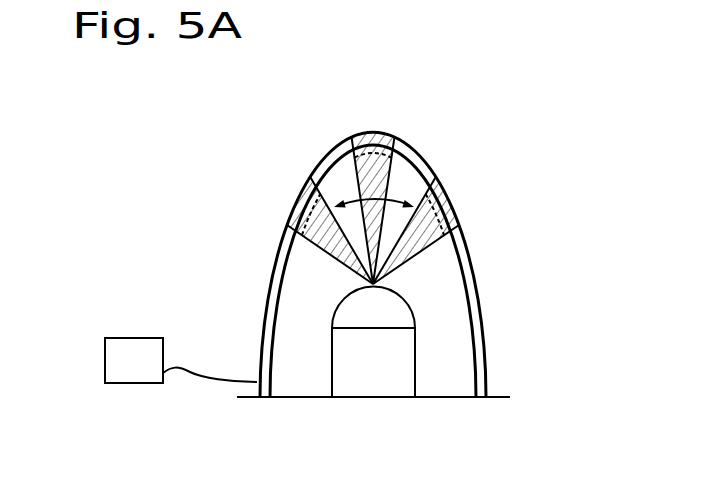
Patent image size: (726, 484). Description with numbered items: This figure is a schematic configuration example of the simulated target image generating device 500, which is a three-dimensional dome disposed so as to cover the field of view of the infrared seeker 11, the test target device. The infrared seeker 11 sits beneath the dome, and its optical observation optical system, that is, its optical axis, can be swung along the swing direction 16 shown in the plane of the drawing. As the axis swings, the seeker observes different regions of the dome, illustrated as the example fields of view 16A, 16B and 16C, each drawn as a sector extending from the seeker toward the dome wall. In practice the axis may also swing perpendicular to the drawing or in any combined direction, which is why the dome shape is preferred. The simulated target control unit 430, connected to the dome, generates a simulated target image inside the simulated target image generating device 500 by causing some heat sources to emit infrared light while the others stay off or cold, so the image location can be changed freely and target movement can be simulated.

The infrared seeker 11 is at (380, 383).
The swing direction 16 is at (403, 202).
The field of view 16A is at (290, 225).
The field of view 16B is at (370, 140).
The field of view 16C is at (455, 226).
The simulated target control unit 430 is at (130, 338).
The simulated target image generating device 500 is at (482, 330).